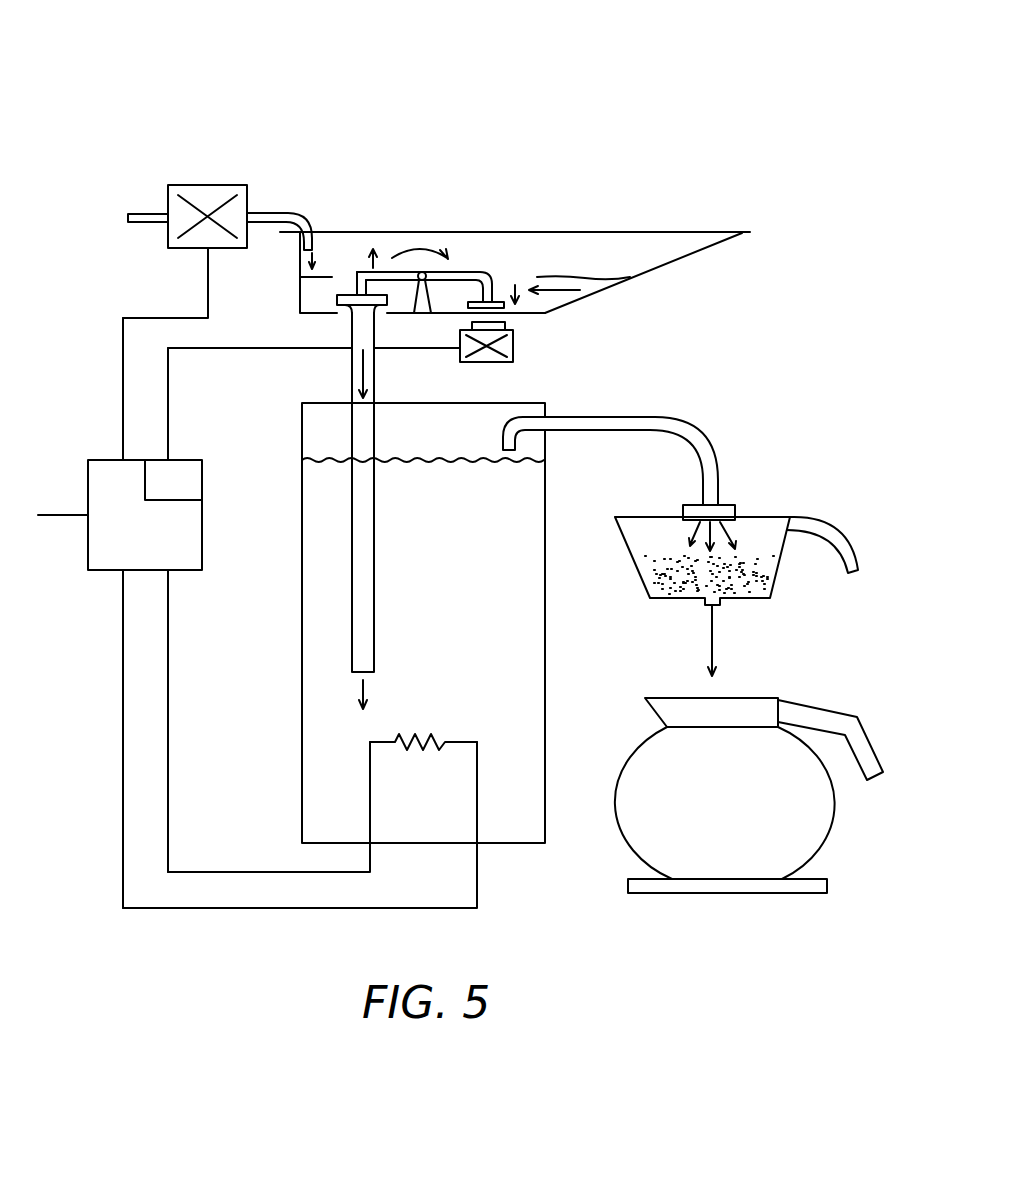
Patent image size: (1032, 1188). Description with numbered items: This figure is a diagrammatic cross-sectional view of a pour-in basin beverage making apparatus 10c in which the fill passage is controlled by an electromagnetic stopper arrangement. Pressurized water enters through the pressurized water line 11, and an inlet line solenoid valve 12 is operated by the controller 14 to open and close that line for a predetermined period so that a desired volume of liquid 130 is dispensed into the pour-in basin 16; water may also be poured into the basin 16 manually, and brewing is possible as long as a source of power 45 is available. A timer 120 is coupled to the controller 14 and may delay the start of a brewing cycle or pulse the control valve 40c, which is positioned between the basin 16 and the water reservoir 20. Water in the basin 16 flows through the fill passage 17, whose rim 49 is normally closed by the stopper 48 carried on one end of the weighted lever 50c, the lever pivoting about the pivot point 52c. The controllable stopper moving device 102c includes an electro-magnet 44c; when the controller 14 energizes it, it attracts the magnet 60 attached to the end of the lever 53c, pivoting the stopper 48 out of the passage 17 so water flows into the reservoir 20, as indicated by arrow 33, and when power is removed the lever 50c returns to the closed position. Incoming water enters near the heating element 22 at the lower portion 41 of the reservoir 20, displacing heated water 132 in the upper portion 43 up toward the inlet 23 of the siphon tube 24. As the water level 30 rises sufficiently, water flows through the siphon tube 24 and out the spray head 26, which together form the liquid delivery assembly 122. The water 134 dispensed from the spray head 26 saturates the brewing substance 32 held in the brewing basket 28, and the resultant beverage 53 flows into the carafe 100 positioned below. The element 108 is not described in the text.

The beverage making apparatus 10c is at (642, 107).
The pressurized water line 11 is at (115, 218).
The inlet line solenoid valve 12 is at (212, 183).
The controller 14 is at (105, 572).
The pour-in basin 16 is at (722, 232).
The fill passage 17 is at (352, 345).
The water reservoir 20 is at (547, 668).
The heating element 22 is at (477, 795).
The inlet of the siphon tube 23 is at (513, 455).
The siphon tube 24 is at (714, 435).
The spray head 26 is at (729, 490).
The brewing basket 28 is at (767, 602).
The water level 30 is at (550, 460).
The brewing substance 32 is at (663, 598).
The arrow 33 is at (367, 680).
The control valve 40c is at (383, 218).
The lower portion 41 is at (313, 774).
The upper portion 43 is at (307, 497).
The electro-magnet 44c is at (513, 352).
The source of power 45 is at (38, 528).
The stopper 48 is at (352, 295).
The rim 49 is at (337, 307).
The lever 50c is at (380, 272).
The pivot point 52c is at (422, 258).
The resultant beverage 53 is at (713, 632).
The end of the lever 53c is at (493, 300).
The magnet 60 is at (508, 293).
The carafe 100 is at (840, 813).
The controllable stopper moving device 102c is at (543, 312).
The reservoir outlet 108 is at (568, 313).
The timer 120 is at (203, 480).
The liquid delivery assembly 122 is at (748, 440).
The liquid 130 is at (604, 277).
The water in the reservoir 132 is at (518, 587).
The water dispensed from the spray head 134 is at (735, 527).